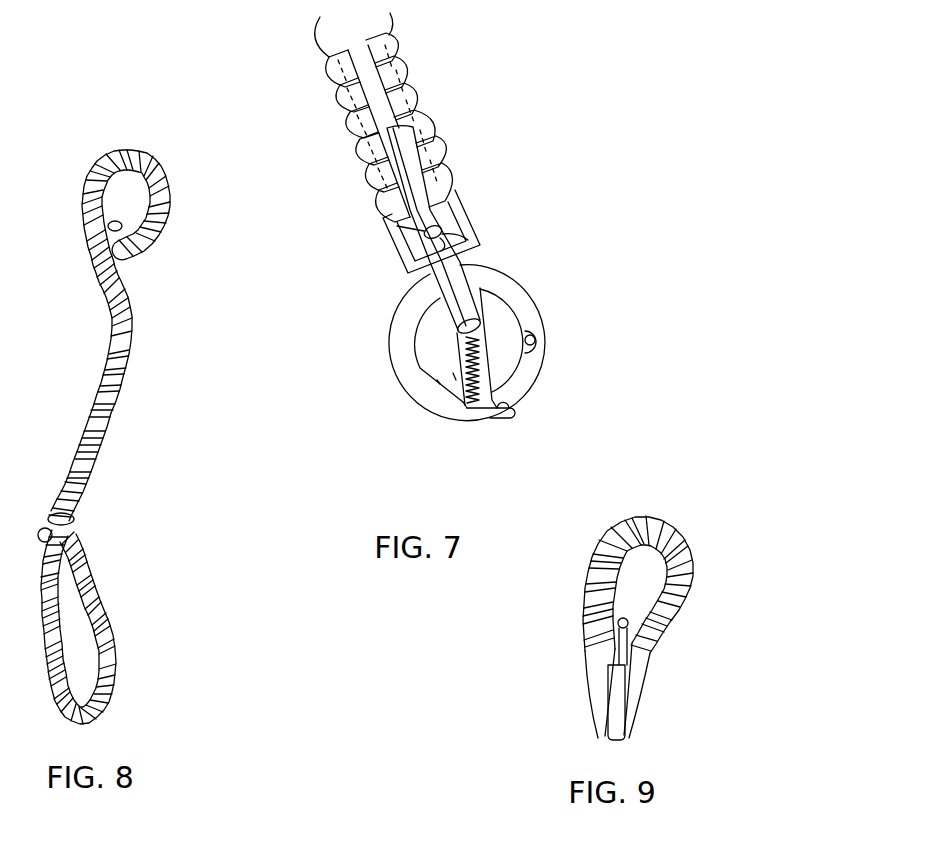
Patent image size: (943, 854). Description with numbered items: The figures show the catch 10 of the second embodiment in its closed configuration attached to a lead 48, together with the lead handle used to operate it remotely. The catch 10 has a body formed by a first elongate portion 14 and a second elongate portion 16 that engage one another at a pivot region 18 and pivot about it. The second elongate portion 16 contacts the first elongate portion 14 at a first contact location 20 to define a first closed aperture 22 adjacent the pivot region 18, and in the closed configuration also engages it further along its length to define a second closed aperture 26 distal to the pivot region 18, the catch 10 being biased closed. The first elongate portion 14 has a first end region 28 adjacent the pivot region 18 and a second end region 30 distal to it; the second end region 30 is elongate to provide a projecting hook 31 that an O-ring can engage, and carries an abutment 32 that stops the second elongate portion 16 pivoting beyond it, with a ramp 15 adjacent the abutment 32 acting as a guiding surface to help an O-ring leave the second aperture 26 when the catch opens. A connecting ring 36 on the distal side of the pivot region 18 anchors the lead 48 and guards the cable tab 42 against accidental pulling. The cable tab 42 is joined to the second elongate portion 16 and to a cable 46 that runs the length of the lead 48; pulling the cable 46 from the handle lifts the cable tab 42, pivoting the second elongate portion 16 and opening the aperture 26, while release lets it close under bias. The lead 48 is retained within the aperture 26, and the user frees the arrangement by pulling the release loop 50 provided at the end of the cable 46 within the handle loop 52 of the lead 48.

In FIG. 7, the catch 10 is at (597, 272).
In FIG. 8, the catch 10 is at (90, 553).
In FIG. 7, the first elongate portion 14 is at (420, 393).
In FIG. 7, the ramp 15 is at (437, 380).
In FIG. 7, the second elongate portion 16 is at (518, 375).
In FIG. 7, the pivot region 18 is at (535, 340).
In FIG. 7, the first contact location 20 is at (457, 327).
In FIG. 7, the first closed aperture 22 is at (497, 322).
In FIG. 7, the second closed aperture 26 is at (453, 373).
In FIG. 7, the first end region 28 is at (523, 310).
In FIG. 7, the second end region 30 is at (462, 423).
In FIG. 7, the projecting hook 31 is at (515, 413).
In FIG. 7, the abutment 32 is at (493, 420).
In FIG. 7, the connecting ring 36 is at (453, 204).
In FIG. 7, the cable tab 42 is at (441, 234).
In FIG. 7, the cable 46 is at (458, 214).
In FIG. 7, the lead 48 is at (417, 113).
In FIG. 8, the lead 48 is at (127, 383).
In FIG. 9, the lead 48 is at (677, 670).
In FIG. 8, the release loop 50 is at (110, 222).
In FIG. 9, the release loop 50 is at (627, 617).
In FIG. 9, the handle loop 52 is at (667, 537).